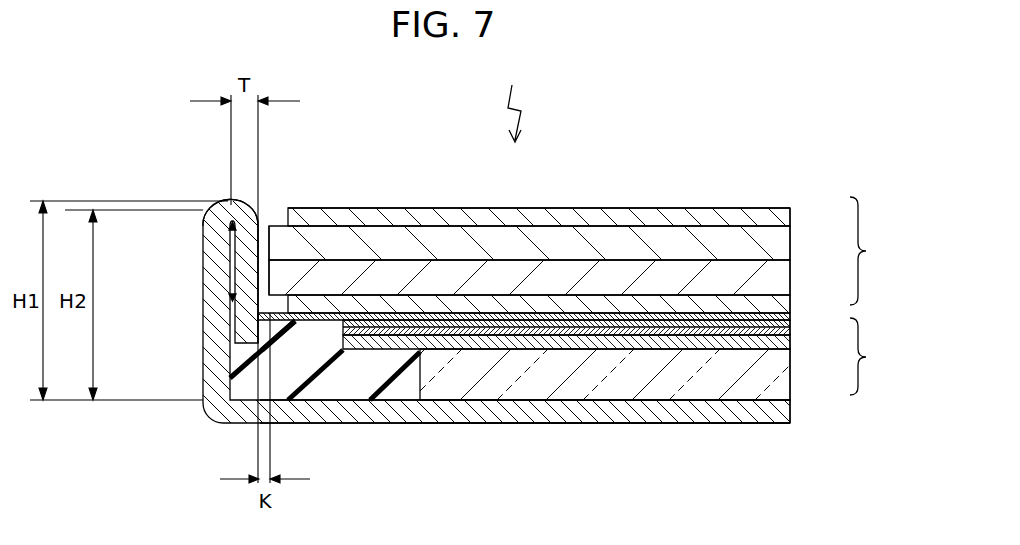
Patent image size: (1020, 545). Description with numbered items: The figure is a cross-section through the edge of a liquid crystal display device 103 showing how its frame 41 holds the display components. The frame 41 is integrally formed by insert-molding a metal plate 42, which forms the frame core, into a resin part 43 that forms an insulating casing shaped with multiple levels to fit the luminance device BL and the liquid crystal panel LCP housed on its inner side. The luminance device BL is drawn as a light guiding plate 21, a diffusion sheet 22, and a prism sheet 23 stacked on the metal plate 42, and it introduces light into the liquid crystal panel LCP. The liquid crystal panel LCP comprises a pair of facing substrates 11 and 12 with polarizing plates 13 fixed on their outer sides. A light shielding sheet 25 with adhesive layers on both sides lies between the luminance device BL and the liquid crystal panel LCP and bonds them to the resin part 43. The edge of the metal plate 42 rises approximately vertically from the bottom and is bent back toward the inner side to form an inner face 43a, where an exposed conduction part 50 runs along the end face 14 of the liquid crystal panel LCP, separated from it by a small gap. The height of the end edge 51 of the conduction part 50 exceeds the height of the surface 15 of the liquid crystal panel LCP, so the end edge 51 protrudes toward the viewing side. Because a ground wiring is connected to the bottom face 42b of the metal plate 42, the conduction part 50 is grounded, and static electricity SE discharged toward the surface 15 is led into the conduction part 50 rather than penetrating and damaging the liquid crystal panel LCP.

The liquid crystal display device 103 is at (757, 142).
The substrate 11 is at (793, 268).
The substrate 12 is at (793, 240).
The polarizing plate 13 is at (793, 212).
The end face 14 is at (268, 232).
The surface 15 is at (627, 208).
The light guiding plate 21 is at (780, 380).
The diffusion sheet 22 is at (793, 342).
The prism sheet 23 is at (793, 332).
The light shielding sheet 25 is at (793, 316).
The frame 41 is at (186, 273).
The metal plate 42 is at (496, 424).
The bottom face 42b is at (640, 424).
The resin part 43 is at (363, 388).
The inner face 43a is at (270, 280).
The conduction part 50 is at (262, 210).
The end edge 51 is at (238, 205).
The static electricity SE is at (512, 95).
The liquid crystal panel LCP is at (879, 251).
The luminance device BL is at (872, 356).